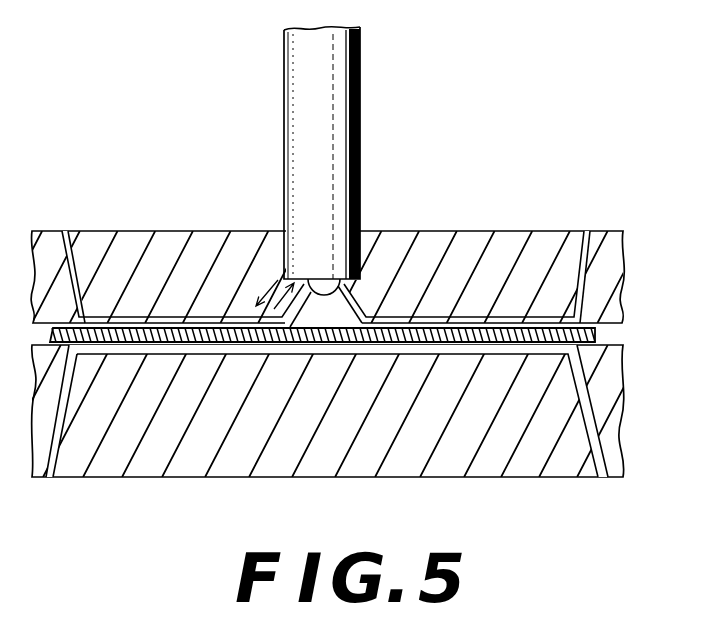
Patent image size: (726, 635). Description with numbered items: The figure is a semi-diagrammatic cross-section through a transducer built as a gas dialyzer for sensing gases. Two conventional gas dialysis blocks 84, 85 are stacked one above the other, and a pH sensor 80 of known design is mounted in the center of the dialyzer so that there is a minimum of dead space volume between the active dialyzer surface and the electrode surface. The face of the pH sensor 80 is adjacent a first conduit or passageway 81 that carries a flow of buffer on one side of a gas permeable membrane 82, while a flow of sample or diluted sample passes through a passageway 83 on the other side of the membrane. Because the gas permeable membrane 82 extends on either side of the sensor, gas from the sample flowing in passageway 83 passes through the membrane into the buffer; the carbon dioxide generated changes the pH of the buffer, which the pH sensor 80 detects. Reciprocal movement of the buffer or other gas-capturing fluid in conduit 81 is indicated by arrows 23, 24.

The pH sensor 80 is at (346, 104).
The first conduit or passageway 81 is at (407, 322).
The gas permeable membrane 82 is at (598, 337).
The passageway 83 is at (217, 350).
The gas dialysis block 84 is at (523, 467).
The gas dialysis block 85 is at (528, 240).
The arrow 23 is at (268, 287).
The arrow 24 is at (297, 312).